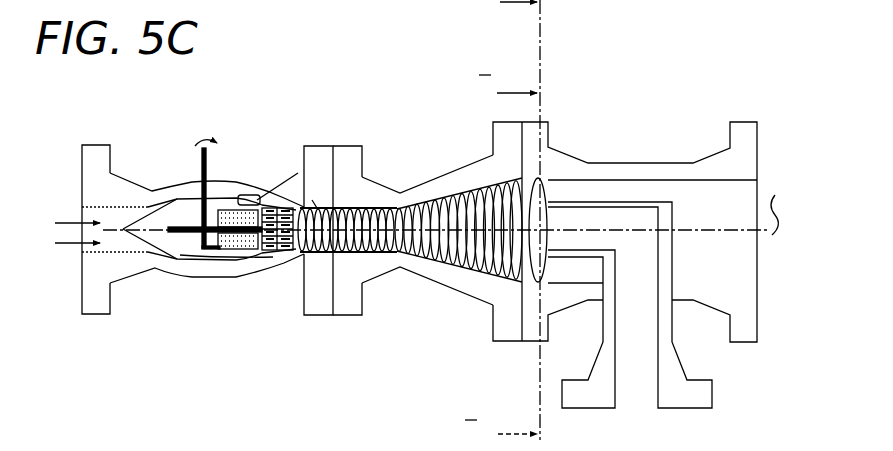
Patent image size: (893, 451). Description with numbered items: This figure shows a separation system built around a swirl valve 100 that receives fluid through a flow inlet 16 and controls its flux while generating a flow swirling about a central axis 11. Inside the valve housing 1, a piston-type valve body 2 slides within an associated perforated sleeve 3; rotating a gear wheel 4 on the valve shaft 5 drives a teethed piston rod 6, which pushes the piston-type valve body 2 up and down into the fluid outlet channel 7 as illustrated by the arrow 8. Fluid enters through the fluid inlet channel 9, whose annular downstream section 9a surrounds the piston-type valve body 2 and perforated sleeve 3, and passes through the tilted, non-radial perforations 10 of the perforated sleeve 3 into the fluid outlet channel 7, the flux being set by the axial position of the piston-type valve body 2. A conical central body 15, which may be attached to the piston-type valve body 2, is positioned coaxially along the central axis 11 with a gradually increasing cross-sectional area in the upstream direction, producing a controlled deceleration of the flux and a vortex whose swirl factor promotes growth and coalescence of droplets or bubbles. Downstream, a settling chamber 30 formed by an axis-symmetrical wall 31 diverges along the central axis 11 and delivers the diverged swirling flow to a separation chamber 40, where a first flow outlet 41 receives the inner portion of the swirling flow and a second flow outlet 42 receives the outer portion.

The swirl valve 100 is at (205, 108).
The valve housing 1 is at (101, 163).
The piston-type valve body 2 is at (243, 250).
The perforated sleeve 3 is at (282, 252).
The gear wheel 4 is at (188, 252).
The valve shaft 5 is at (206, 176).
The teethed piston rod 6 is at (192, 203).
The fluid outlet channel 7 is at (312, 200).
The arrow 8 is at (220, 254).
The fluid inlet channel 9 is at (133, 247).
The annular downstream section 9a is at (256, 195).
The perforations 10 is at (298, 173).
The central axis 11 is at (777, 205).
The conical central body 15 is at (340, 207).
The flow inlet 16 is at (44, 241).
The settling chamber 30 is at (399, 120).
The wall 31 is at (462, 190).
The separation chamber 40 is at (644, 122).
The first flow outlet 41 is at (633, 343).
The second flow outlet 42 is at (718, 217).